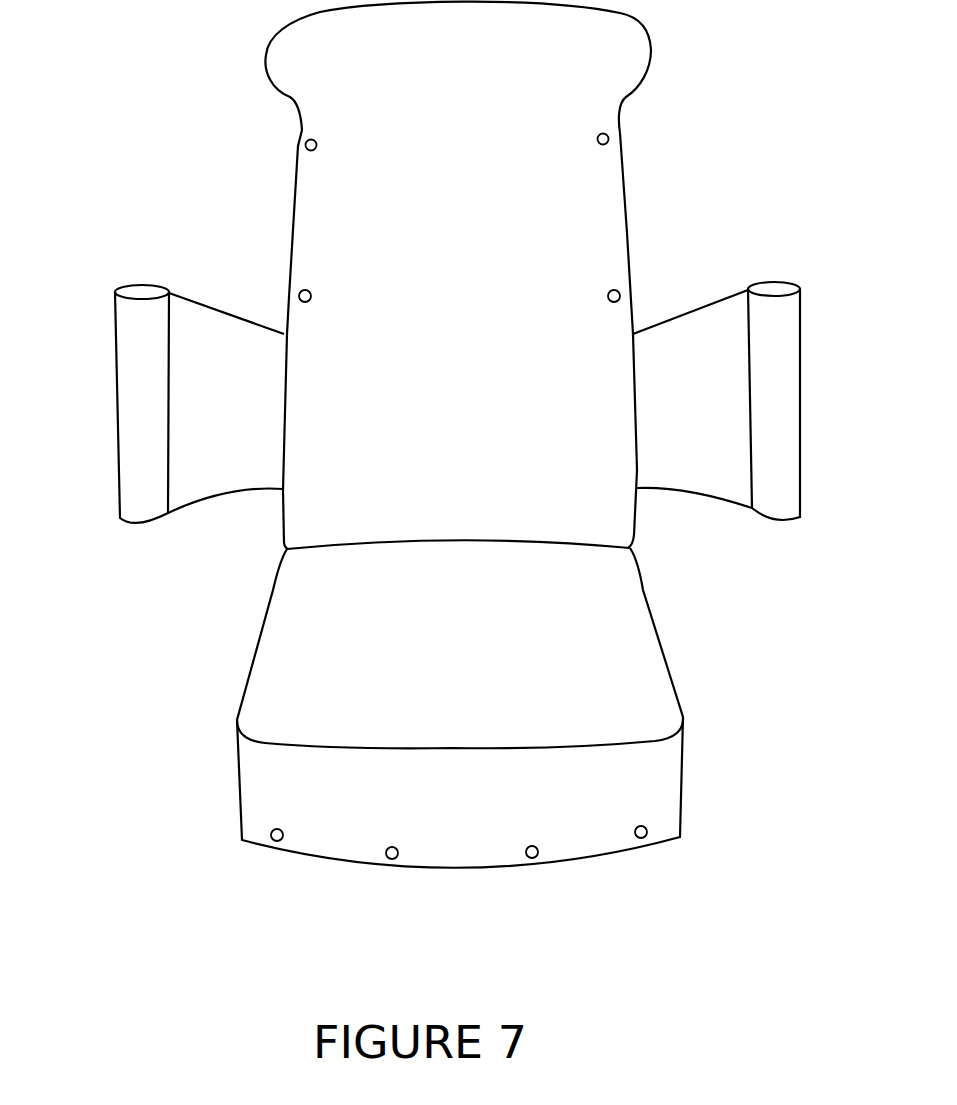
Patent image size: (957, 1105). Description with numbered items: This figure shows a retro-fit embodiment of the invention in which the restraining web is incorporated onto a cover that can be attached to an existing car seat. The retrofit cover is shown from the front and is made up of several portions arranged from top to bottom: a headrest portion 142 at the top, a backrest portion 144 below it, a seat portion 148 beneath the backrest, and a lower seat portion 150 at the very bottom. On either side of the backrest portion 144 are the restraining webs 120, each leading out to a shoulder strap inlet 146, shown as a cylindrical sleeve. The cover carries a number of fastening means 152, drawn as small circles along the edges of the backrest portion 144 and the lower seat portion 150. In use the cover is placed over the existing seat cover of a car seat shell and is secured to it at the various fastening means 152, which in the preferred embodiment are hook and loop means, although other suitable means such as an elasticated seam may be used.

The restraining web 120 is at (218, 472).
The headrest portion 142 is at (633, 43).
The backrest portion 144 is at (483, 226).
The shoulder strap inlet 146 is at (128, 443).
The seat portion 148 is at (487, 648).
The lower seat portion 150 is at (483, 818).
The fastening means 152 is at (305, 146).